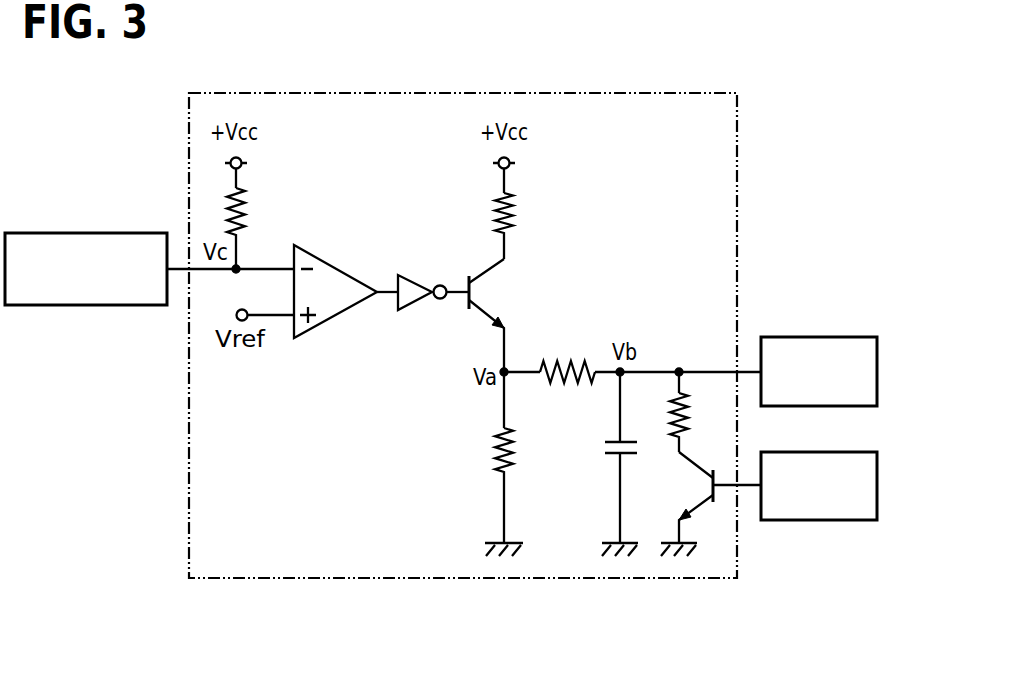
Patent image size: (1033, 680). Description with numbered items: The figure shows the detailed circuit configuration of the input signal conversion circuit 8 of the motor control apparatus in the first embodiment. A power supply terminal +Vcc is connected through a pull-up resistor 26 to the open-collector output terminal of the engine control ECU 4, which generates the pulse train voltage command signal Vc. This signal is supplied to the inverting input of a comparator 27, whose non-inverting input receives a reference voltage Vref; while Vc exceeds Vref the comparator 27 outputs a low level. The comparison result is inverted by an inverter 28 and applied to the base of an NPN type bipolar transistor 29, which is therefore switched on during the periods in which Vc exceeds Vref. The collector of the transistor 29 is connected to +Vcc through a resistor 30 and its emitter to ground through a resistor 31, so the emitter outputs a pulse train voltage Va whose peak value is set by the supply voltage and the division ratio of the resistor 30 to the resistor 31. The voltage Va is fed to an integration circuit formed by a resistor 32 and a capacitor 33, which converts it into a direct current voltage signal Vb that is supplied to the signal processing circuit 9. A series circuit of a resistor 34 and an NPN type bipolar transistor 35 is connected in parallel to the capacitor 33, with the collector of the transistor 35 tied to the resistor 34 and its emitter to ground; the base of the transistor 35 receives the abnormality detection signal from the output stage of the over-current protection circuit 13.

The engine control ECU 4 is at (98, 233).
The input signal conversion circuit 8 is at (665, 93).
The signal processing circuit 9 is at (820, 337).
The over-current protection circuit 13 is at (819, 452).
The pull-up resistor 26 is at (247, 211).
The comparator 27 is at (330, 261).
The inverter 28 is at (425, 305).
The NPN type bipolar transistor 29 is at (505, 290).
The resistor 30 is at (517, 207).
The resistor 31 is at (492, 455).
The resistor 32 is at (565, 385).
The capacitor 33 is at (600, 448).
The resistor 34 is at (690, 425).
The NPN type bipolar transistor 35 is at (700, 513).